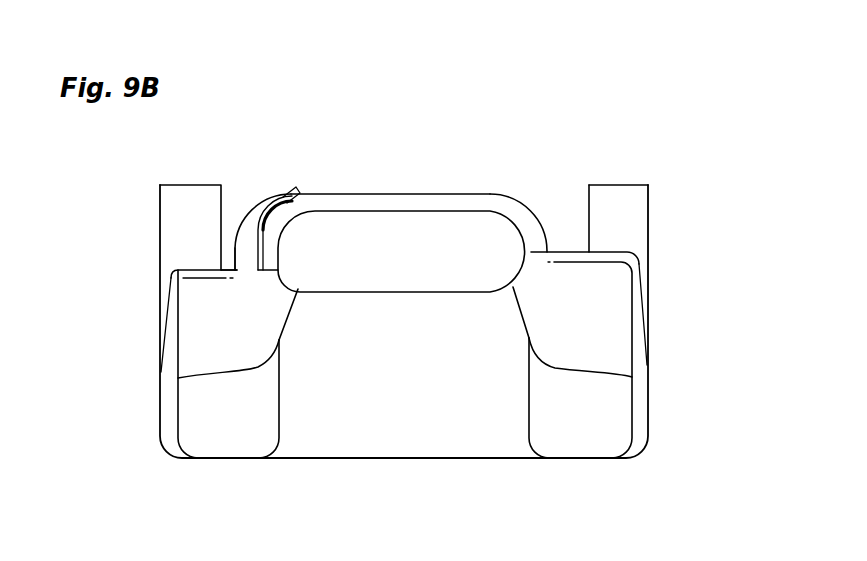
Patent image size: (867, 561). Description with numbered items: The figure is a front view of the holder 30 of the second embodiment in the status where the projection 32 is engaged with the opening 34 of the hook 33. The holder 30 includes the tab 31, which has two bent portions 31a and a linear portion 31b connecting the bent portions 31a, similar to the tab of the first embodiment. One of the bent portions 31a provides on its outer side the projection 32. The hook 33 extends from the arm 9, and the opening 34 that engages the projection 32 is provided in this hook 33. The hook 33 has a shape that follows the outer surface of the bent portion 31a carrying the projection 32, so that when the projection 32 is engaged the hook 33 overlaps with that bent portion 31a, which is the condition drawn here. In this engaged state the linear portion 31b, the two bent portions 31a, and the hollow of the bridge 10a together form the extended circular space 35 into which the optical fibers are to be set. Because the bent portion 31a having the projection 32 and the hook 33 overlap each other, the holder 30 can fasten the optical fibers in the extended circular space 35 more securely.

The arm 9 is at (170, 422).
The bridge 10a is at (467, 415).
The holder 30 is at (445, 92).
The tab 31 is at (394, 189).
The bent portion 31a is at (283, 208).
The linear portion 31b is at (464, 193).
The projection 32 is at (268, 227).
The hook 33 is at (233, 247).
The opening 34 is at (268, 218).
The extended circular space 35 is at (364, 230).